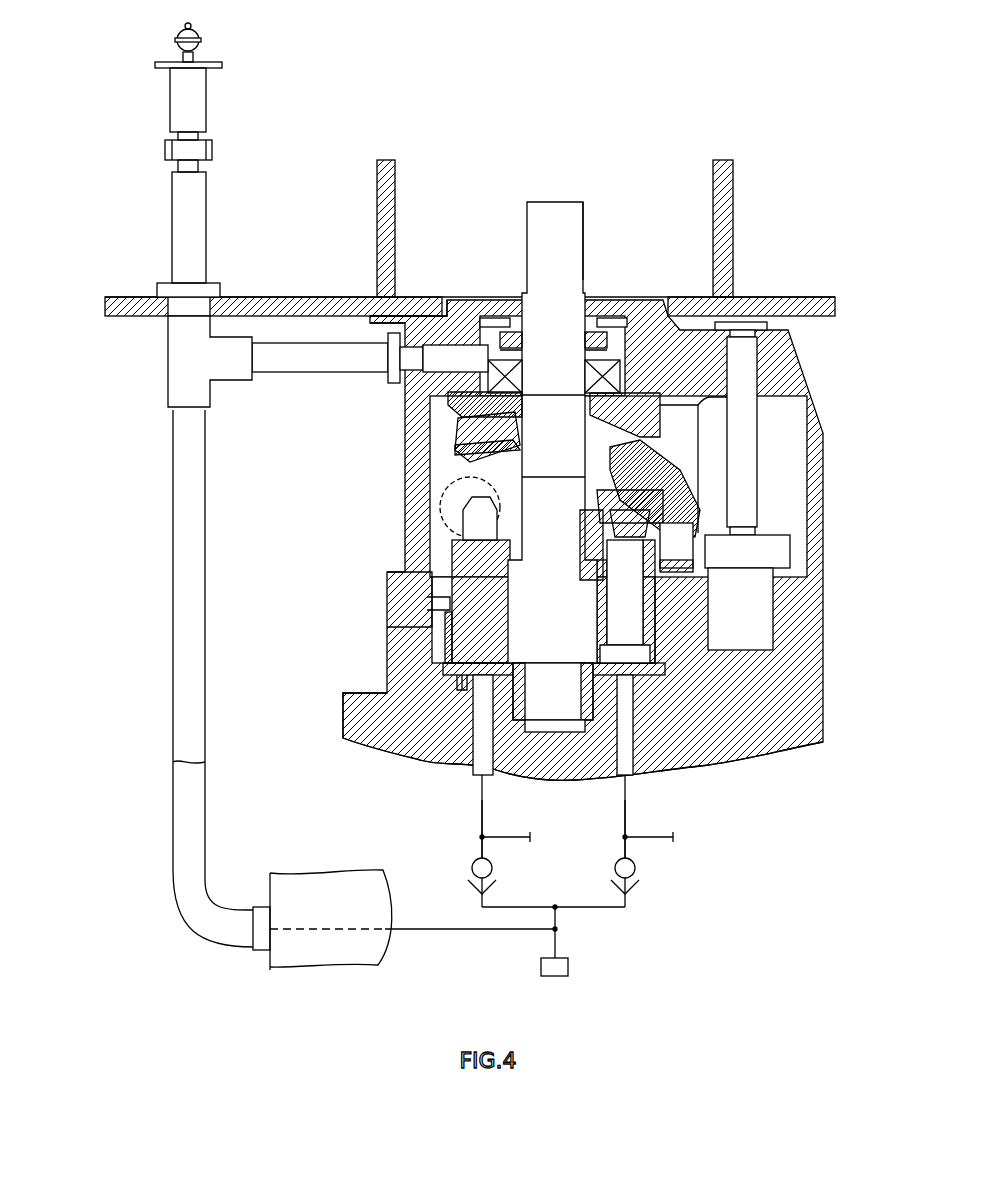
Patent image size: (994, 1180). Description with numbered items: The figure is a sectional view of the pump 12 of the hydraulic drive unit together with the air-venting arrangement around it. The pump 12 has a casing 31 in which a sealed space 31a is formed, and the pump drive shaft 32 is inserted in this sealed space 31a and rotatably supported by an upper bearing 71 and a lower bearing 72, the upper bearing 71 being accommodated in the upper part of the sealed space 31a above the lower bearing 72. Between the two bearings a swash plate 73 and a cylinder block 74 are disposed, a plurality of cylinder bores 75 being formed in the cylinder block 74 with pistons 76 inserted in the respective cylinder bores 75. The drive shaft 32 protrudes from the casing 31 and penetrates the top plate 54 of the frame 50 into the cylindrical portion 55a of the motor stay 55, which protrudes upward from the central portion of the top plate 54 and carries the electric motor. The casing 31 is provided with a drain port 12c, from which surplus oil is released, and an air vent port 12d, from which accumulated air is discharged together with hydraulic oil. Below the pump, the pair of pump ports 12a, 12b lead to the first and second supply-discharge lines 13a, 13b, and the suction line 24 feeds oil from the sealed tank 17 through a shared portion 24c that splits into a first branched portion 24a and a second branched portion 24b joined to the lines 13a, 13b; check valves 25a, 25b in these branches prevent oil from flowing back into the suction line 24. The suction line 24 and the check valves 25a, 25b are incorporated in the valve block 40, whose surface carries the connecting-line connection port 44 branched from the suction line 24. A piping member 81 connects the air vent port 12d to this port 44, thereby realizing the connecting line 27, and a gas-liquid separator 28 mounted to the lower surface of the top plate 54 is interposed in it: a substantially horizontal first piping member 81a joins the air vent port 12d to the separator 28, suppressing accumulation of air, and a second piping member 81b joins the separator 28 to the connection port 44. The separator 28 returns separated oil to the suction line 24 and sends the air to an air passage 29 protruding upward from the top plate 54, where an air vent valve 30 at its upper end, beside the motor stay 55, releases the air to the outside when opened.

The pump 12 is at (348, 740).
The first pump port 12a is at (460, 768).
The second pump port 12b is at (640, 780).
The drain port 12c is at (440, 503).
The air vent port 12d is at (432, 318).
The first supply-discharge line 13a is at (505, 835).
The second supply-discharge line 13b is at (646, 835).
The sealed tank 17 is at (568, 968).
The suction line 24 is at (428, 945).
The first branched portion 24a is at (485, 848).
The second branched portion 24b is at (630, 848).
The shared portion 24c is at (507, 935).
The check valve 25a is at (494, 882).
The check valve 25b is at (637, 882).
The connecting line 27 is at (148, 548).
The gas-liquid separator 28 is at (166, 366).
The air passage 29 is at (207, 215).
The air vent valve 30 is at (200, 40).
The casing 31 is at (825, 448).
The sealed space 31a is at (430, 583).
The pump drive shaft 32 is at (528, 230).
The valve block 40 is at (378, 873).
The connecting-line connection port 44 is at (258, 955).
The frame 50 is at (805, 290).
The top plate 54 is at (312, 297).
The motor stay 55 is at (726, 158).
The cylindrical portion 55a is at (378, 185).
The upper bearing 71 is at (505, 365).
The lower bearing 72 is at (597, 780).
The swash plate 73 is at (460, 440).
The cylinder block 74 is at (470, 628).
The cylinder bores 75 is at (680, 690).
The pistons 76 is at (462, 560).
The piping member 81 is at (150, 480).
The first piping member 81a is at (300, 375).
The second piping member 81b is at (205, 480).